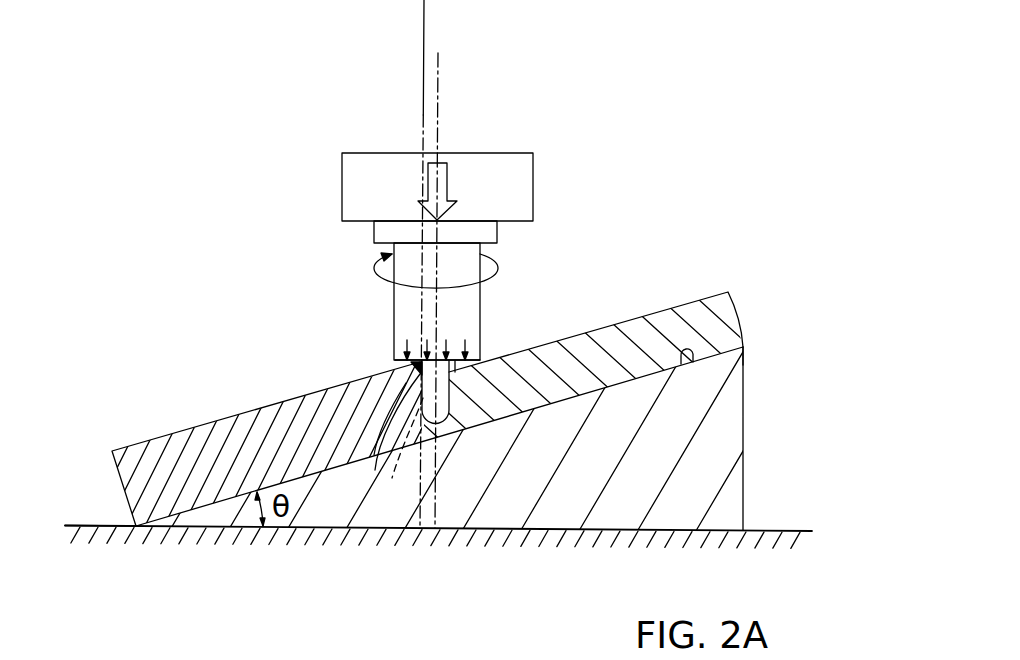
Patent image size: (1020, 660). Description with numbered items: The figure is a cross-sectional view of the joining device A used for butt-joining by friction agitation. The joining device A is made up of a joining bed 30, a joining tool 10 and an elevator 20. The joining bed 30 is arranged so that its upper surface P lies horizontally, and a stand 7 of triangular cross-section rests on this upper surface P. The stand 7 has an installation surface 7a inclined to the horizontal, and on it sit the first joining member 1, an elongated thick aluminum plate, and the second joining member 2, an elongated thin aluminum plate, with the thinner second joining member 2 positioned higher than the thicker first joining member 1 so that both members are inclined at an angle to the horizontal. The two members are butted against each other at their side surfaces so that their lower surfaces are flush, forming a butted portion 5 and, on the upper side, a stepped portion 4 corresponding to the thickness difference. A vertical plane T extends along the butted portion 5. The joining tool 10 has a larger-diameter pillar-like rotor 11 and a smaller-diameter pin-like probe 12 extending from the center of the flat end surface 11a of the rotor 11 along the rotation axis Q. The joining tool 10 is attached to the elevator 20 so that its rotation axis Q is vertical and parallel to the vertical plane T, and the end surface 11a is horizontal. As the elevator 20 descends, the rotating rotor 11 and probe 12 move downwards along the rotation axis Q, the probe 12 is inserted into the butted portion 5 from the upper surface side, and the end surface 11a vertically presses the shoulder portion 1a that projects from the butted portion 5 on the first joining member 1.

The first joining member 1 is at (223, 438).
The shoulder portion 1a is at (392, 370).
The second joining member 2 is at (650, 328).
The stepped portion 4 is at (375, 470).
The butted portion 5 is at (401, 453).
The stand 7 is at (703, 420).
The installation surface 7a is at (745, 363).
The joining tool 10 is at (421, 348).
The rotor 11 is at (407, 318).
The end surface 11a is at (480, 372).
The probe 12 is at (450, 400).
The elevator 20 is at (338, 178).
The joining bed 30 is at (767, 537).
The joining device A is at (451, 291).
The vertical plane T is at (424, 22).
The rotation axis Q is at (438, 102).
The upper surface P is at (104, 525).